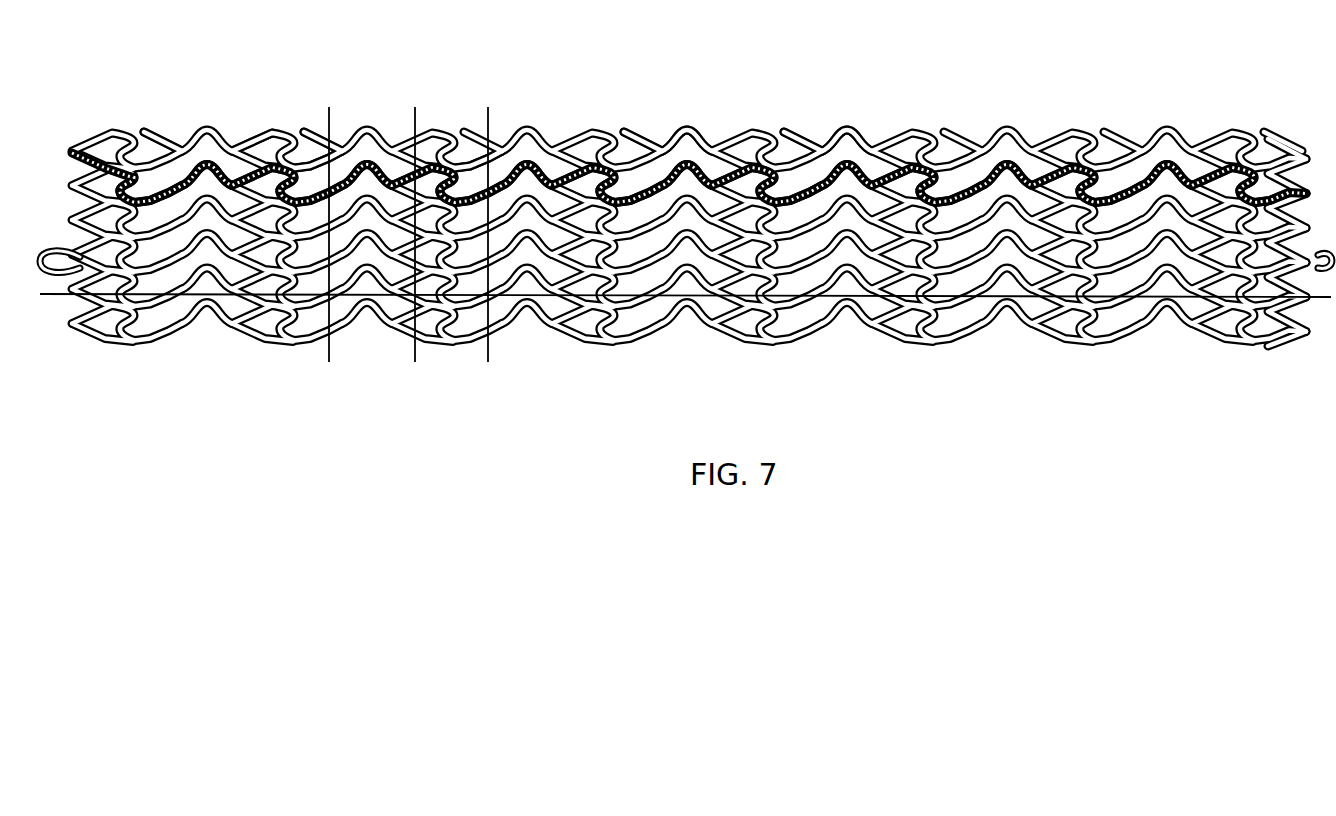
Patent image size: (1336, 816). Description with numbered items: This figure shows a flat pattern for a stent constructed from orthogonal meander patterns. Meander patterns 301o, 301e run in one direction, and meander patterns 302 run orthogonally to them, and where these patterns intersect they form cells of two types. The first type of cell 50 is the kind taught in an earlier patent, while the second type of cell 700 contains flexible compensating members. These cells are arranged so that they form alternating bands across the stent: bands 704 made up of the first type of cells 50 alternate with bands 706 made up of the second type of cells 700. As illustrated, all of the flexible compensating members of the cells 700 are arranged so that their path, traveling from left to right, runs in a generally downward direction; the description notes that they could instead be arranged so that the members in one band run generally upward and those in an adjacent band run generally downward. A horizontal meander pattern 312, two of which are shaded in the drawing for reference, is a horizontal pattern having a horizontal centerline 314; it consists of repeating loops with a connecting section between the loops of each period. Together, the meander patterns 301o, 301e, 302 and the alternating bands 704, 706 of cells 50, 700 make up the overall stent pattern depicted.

The first type of cell 50 is at (689, 199).
The meander pattern 301o is at (150, 138).
The meander pattern 301e is at (242, 138).
The meander pattern 302 is at (330, 127).
The second type of cell 700 is at (250, 160).
The band of first type of cells 704 is at (693, 118).
The band of second type of cells 706 is at (610, 125).
The meander pattern 312 is at (80, 258).
The horizontal centerline 314 is at (52, 295).